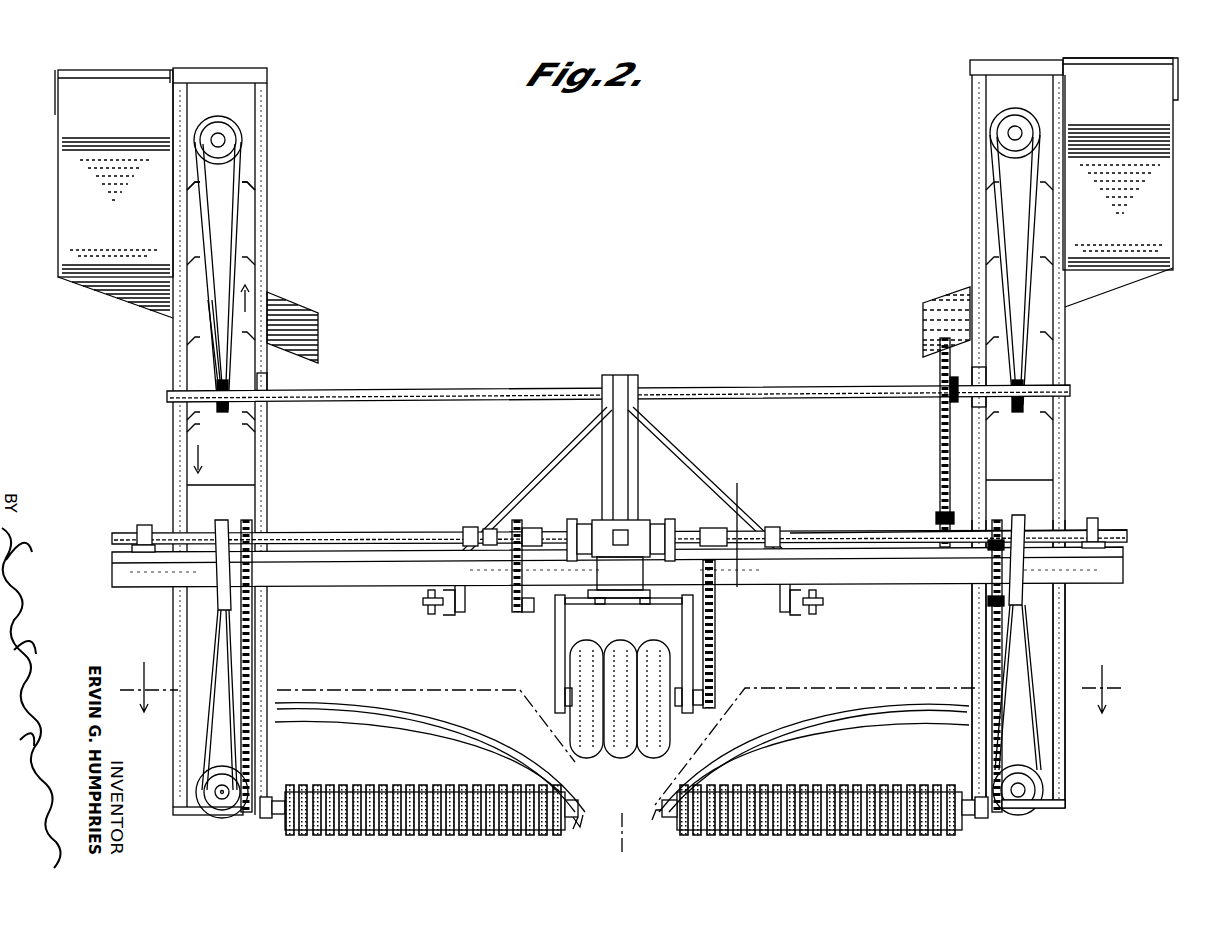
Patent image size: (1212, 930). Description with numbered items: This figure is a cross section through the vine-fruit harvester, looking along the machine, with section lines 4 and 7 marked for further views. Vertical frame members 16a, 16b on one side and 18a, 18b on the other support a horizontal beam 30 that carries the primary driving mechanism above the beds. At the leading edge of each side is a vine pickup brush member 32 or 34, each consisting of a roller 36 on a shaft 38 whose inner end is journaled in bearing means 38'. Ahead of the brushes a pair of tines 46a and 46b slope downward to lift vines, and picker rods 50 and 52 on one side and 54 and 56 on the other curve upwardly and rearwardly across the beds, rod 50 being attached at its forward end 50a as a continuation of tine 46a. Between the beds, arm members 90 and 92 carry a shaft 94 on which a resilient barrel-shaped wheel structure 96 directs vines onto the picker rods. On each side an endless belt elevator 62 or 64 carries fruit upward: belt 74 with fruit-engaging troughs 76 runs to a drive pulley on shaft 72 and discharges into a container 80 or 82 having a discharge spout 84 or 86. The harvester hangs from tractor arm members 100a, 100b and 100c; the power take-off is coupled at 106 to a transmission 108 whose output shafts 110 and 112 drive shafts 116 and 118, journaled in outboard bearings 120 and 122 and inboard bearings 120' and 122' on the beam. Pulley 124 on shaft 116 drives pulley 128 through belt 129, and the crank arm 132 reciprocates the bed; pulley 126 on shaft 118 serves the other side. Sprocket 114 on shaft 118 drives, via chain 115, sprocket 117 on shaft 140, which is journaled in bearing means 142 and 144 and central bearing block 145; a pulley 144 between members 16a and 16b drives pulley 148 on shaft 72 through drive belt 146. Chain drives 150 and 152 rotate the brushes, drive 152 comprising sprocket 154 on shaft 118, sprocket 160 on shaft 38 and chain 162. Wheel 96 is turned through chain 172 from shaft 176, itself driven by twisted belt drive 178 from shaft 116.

The vertical frame member 16a is at (175, 618).
The vertical frame member 16b is at (270, 658).
The vertical frame member 18a is at (1066, 632).
The vertical frame member 18b is at (973, 630).
The horizontal beam 30 is at (1112, 578).
The vine pickup roller or brush member 32 is at (336, 773).
The vine pickup roller or brush member 34 is at (879, 756).
The roller 36 is at (558, 834).
The shaft 38 is at (1049, 820).
The bearing means 38' is at (583, 837).
The tine 46a is at (580, 812).
The tine 46b is at (655, 812).
The picker rod 50 is at (495, 727).
The forward end of picker rod 50a is at (560, 772).
The picker rod 52 is at (396, 730).
The picker rod 54 is at (690, 768).
The picker rod 56 is at (782, 765).
The fruit elevating assembly 62 is at (160, 368).
The fruit elevating assembly 64 is at (1084, 351).
The shaft 72 is at (225, 137).
The endless belt 74 is at (212, 318).
The fruit-engaging trough 76 is at (252, 190).
The hopper or container 80 is at (78, 222).
The hopper or container 82 is at (1136, 250).
The discharge spout 84 is at (318, 322).
The discharge spout 86 is at (922, 320).
The arm member 90 is at (567, 650).
The arm member 92 is at (682, 626).
The shaft 94 is at (702, 692).
The resilient barrel-shaped wheel structure 96 is at (619, 652).
The arm member 100a is at (433, 614).
The arm member 100b is at (817, 606).
The arm member 100c is at (640, 402).
The coupling 106 is at (630, 533).
The two output shaft transmission 108 is at (598, 522).
The output shaft 110 is at (534, 530).
The output shaft 112 is at (690, 532).
The sprocket 114 is at (936, 516).
The chain 115 is at (940, 456).
The shaft 116 is at (363, 532).
The sprocket 117 is at (950, 385).
The shaft 118 is at (853, 530).
The bearing 120 is at (135, 519).
The inboard bearing 120' is at (445, 516).
The bearing 122 is at (1105, 517).
The inboard bearing 122' is at (796, 521).
The pulley 124 is at (224, 522).
The pulley 126 is at (1020, 518).
The pulley 128 is at (207, 800).
The belt 129 is at (206, 705).
The crank arm 132 is at (265, 808).
The shaft 140 is at (503, 390).
The bearing means 142 is at (267, 385).
The pulley 144 is at (212, 405).
The bearing block 145 is at (628, 376).
The drive belt 146 is at (238, 236).
The pulley 148 is at (233, 145).
The chain drive 150 is at (262, 621).
The chain drive 152 is at (983, 657).
The sprocket 154 is at (988, 545).
The sprocket 160 is at (998, 818).
The chain 162 is at (988, 600).
The chain 172 is at (716, 630).
The shaft 176 is at (516, 612).
The twisted belt drive 178 is at (493, 528).
The section line 4- 4 is at (622, 687).
The section line 7- 7 is at (730, 496).